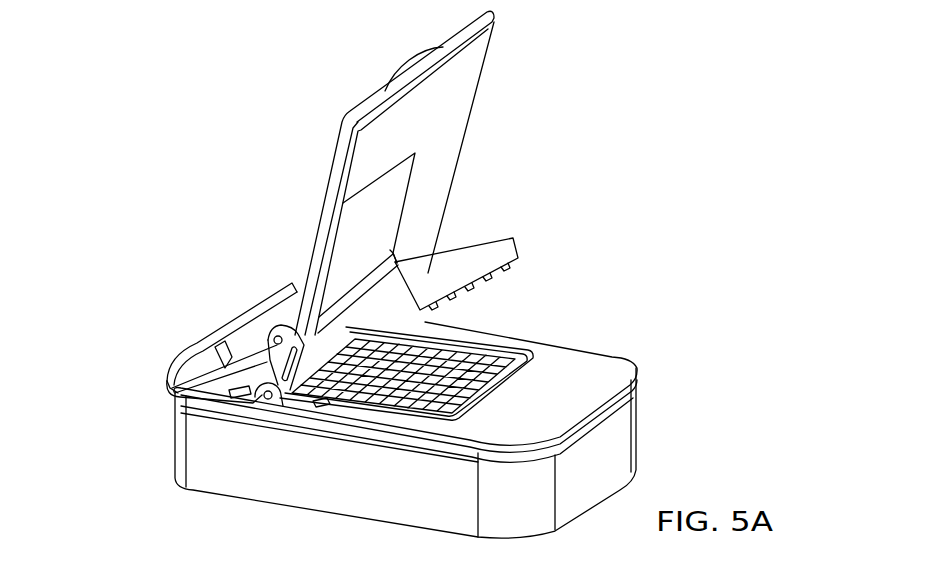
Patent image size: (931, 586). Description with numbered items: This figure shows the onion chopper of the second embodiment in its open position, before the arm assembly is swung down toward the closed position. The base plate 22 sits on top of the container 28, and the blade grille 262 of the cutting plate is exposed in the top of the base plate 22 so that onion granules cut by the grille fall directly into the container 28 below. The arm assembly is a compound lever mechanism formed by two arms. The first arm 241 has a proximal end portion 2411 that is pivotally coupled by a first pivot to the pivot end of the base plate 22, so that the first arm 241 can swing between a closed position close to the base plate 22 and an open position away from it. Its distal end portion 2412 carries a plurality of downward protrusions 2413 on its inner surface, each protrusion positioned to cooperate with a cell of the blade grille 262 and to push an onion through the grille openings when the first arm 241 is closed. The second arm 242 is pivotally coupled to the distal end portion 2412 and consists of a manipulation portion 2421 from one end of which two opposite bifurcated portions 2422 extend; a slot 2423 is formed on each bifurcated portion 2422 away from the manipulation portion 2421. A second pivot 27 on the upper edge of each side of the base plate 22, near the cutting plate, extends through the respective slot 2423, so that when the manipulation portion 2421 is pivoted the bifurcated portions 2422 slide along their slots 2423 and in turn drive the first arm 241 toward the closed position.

The base plate 22 is at (588, 373).
The container 28 is at (200, 468).
The second pivot 27 is at (266, 400).
The blade grille 262 is at (367, 397).
The second arm 242 is at (330, 133).
The manipulation portion 2421 is at (437, 100).
The bifurcated portions 2422 is at (425, 208).
The first arm 241 is at (267, 323).
The proximal end portion 2411 is at (233, 323).
The distal end portion 2412 is at (443, 233).
The downward protrusions 2413 is at (487, 287).
The slot 2423 is at (170, 377).